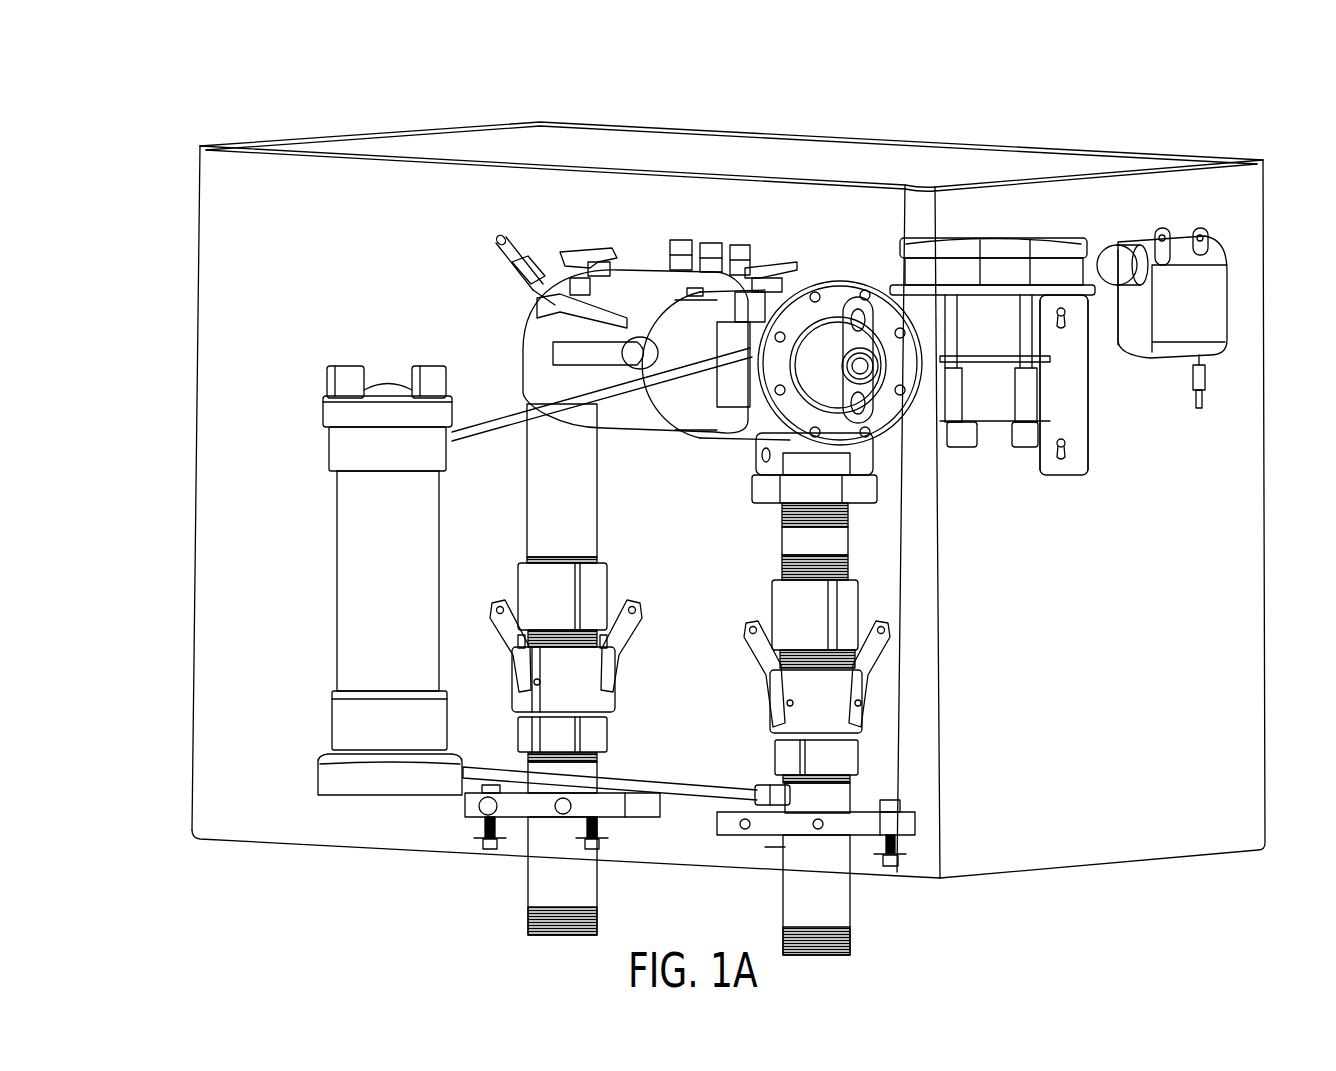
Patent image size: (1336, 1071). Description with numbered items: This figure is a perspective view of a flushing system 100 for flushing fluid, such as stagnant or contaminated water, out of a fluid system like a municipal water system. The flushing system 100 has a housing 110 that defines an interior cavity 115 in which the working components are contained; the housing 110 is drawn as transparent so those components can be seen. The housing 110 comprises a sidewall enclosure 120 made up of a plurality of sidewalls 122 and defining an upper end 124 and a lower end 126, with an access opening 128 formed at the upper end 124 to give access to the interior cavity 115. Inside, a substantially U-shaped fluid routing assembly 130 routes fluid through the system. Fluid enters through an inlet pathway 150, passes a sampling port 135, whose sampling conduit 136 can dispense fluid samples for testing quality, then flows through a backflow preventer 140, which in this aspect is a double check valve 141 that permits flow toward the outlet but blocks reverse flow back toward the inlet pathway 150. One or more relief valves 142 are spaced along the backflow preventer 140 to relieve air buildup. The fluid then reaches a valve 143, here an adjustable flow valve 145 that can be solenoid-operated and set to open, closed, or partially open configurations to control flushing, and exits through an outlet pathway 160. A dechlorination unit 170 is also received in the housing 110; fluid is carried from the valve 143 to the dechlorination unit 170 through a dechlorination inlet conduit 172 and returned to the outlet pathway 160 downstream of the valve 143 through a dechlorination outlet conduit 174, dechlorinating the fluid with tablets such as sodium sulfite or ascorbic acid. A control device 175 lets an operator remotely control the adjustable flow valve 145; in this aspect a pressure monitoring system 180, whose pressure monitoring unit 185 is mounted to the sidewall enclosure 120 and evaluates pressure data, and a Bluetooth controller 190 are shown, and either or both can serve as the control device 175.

The flushing system 100 is at (704, 510).
The housing 110 is at (711, 490).
The interior cavity 115 is at (731, 128).
The sidewall enclosure 120 is at (729, 490).
The sidewalls 122 is at (729, 474).
The upper end 124 is at (731, 128).
The lower end 126 is at (566, 872).
The access opening 128 is at (1102, 479).
The fluid routing assembly 130 is at (702, 514).
The sampling port 135 is at (485, 279).
The sampling conduit 136 is at (581, 230).
The backflow preventer 140 is at (635, 253).
The double check valve 141 is at (635, 253).
The relief valves 142 is at (693, 176).
The valve 143 is at (784, 200).
The adjustable flow valve 145 is at (784, 200).
The inlet pathway 150 is at (562, 669).
The outlet pathway 160 is at (816, 729).
The dechlorination unit 170 is at (352, 580).
The dechlorination inlet conduit 172 is at (602, 391).
The dechlorination outlet conduit 174 is at (626, 739).
The control device 175 is at (1184, 360).
The pressure monitoring system 180 is at (992, 276).
The pressure monitoring unit 185 is at (996, 188).
The Bluetooth controller 190 is at (1207, 318).